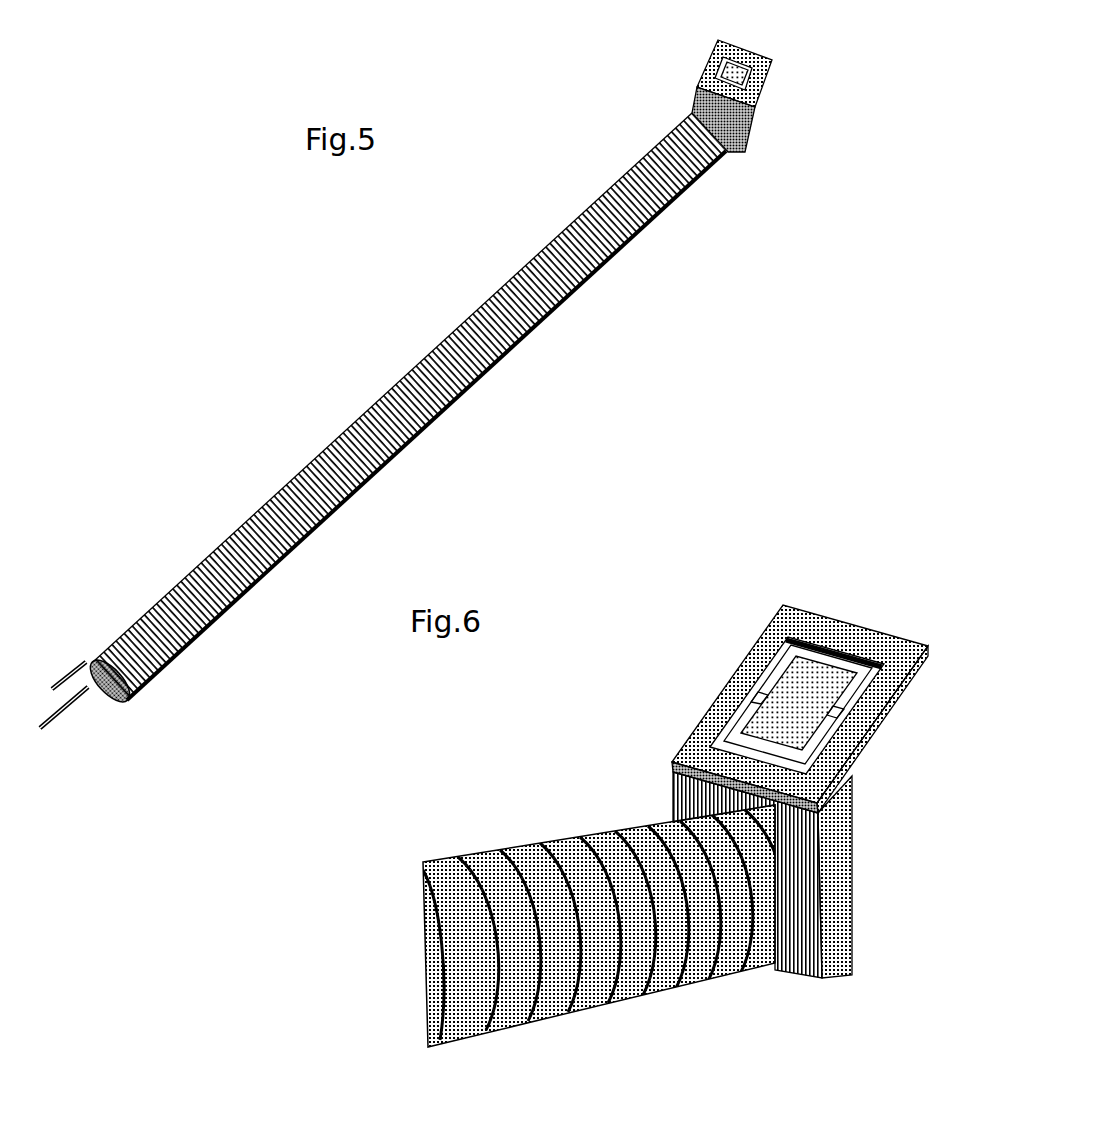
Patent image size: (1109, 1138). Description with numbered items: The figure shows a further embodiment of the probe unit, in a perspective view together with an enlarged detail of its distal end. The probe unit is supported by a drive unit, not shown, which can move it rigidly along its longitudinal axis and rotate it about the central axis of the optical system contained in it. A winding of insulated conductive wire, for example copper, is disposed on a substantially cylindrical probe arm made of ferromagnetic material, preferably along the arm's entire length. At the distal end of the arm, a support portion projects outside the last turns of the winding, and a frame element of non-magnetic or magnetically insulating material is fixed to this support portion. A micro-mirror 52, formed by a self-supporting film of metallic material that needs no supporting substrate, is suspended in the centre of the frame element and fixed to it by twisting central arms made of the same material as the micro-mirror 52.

In FIG. 5, the micro-mirror 52 is at (736, 73).
In FIG. 6, the micro-mirror 52 is at (813, 677).